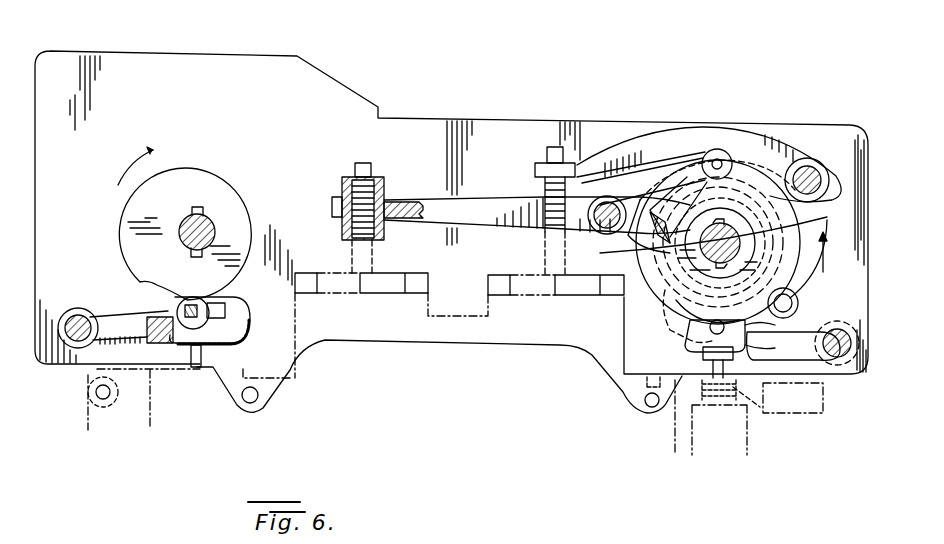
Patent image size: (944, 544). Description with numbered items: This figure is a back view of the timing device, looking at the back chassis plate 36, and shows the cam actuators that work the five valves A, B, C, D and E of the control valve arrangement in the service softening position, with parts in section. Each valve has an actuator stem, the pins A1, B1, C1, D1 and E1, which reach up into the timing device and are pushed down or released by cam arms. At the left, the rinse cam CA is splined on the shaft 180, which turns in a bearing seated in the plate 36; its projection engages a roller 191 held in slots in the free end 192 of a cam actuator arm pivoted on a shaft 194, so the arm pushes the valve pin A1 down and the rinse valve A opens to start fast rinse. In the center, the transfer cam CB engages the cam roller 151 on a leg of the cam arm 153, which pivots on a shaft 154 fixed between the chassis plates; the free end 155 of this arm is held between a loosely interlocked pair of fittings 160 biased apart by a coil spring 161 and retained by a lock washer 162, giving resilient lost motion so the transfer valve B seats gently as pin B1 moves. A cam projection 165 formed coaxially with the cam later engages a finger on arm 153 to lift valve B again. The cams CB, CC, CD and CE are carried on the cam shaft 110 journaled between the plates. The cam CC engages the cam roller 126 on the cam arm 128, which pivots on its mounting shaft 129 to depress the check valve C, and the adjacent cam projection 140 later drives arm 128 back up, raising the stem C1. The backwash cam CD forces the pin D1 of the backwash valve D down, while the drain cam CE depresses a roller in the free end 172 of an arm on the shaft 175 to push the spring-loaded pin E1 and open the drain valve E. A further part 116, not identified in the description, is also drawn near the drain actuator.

The back chassis plate 36 is at (80, 52).
The shaft 180 is at (213, 212).
The cam CA is at (126, 220).
The shaft 194 is at (82, 325).
The roller 191 is at (178, 312).
The free end 192 is at (248, 330).
The valve pin A1 is at (200, 360).
The rinse valve A is at (190, 409).
The transfer valve B is at (364, 327).
The valve pin B1 is at (350, 265).
The check valve C is at (554, 325).
The valve stem C1 is at (545, 265).
The fittings 160 is at (345, 182).
The coil spring 161 is at (384, 195).
The lock washer 162 is at (366, 170).
The free end 155 is at (333, 213).
The cam arm 153 is at (484, 200).
The shaft 154 is at (607, 196).
The cam arm 128 is at (642, 145).
The cam roller 151 is at (717, 150).
The mounting shaft 129 is at (810, 170).
The cam projection 140 is at (643, 169).
The cam CB is at (770, 190).
The cam projection 165 is at (668, 225).
The cam shaft 110 is at (727, 250).
The cam CE is at (618, 240).
The cam roller 126 is at (803, 303).
The backwash cam CD is at (660, 305).
The cam CC is at (667, 340).
The free end 172 is at (670, 333).
The valve pin E1 is at (705, 375).
The link 116 is at (820, 355).
The shaft 175 is at (835, 365).
The valve pin D1 is at (778, 397).
The backwash valve D is at (745, 425).
The drain valve E is at (675, 430).